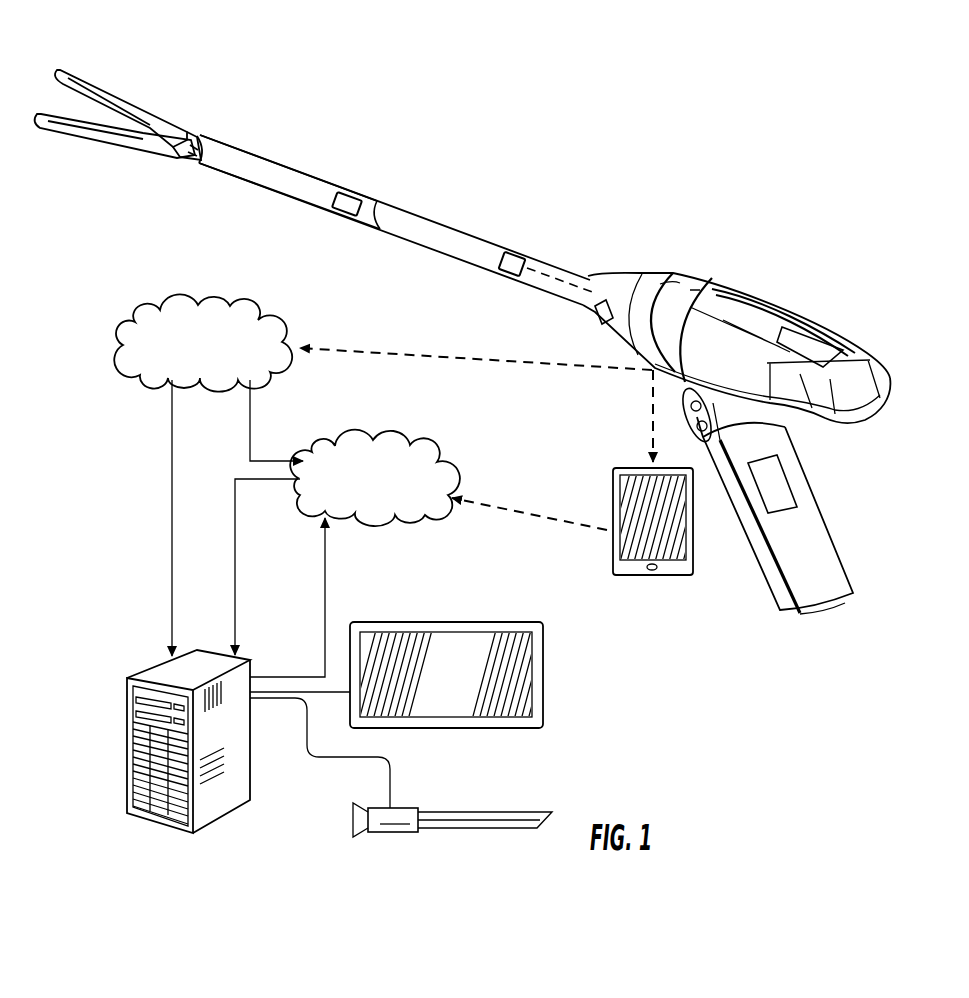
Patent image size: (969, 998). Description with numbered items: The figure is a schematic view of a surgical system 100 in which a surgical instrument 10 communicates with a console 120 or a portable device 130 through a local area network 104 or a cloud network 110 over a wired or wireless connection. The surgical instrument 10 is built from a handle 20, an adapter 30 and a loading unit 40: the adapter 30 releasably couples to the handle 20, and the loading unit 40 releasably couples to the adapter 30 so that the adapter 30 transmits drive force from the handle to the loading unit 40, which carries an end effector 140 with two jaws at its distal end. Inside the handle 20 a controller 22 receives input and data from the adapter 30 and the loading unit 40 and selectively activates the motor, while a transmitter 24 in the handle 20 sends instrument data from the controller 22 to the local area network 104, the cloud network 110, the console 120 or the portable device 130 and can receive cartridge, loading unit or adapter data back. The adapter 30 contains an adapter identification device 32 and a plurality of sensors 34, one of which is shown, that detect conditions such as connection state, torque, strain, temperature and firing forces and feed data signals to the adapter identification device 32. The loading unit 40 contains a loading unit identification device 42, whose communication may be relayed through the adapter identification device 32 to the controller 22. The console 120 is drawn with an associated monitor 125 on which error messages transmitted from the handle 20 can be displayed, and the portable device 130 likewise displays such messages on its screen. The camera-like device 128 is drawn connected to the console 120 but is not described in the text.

The surgical instrument 10 is at (483, 136).
The handle 20 is at (838, 538).
The controller 22 is at (785, 468).
The transmitter 24 is at (655, 372).
The adapter 30 is at (452, 215).
The adapter identification device 32 is at (605, 298).
The sensors 34 is at (505, 275).
The loading unit 40 is at (265, 150).
The loading unit identification device 42 is at (345, 218).
The surgical system 100 is at (738, 169).
The local area network 104 is at (165, 301).
The cloud network 110 is at (337, 441).
The console 120 is at (127, 745).
The monitor 125 is at (428, 616).
The camera / endoscope 128 is at (403, 833).
The portable device 130 is at (649, 578).
The end effector 140 is at (150, 100).